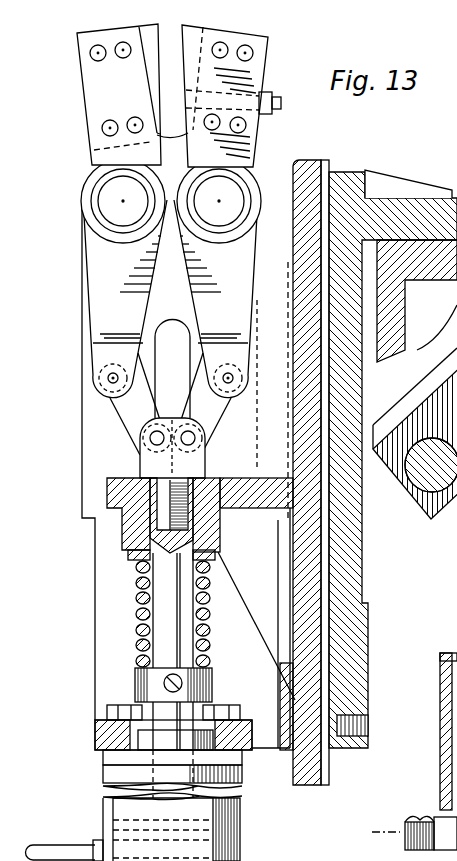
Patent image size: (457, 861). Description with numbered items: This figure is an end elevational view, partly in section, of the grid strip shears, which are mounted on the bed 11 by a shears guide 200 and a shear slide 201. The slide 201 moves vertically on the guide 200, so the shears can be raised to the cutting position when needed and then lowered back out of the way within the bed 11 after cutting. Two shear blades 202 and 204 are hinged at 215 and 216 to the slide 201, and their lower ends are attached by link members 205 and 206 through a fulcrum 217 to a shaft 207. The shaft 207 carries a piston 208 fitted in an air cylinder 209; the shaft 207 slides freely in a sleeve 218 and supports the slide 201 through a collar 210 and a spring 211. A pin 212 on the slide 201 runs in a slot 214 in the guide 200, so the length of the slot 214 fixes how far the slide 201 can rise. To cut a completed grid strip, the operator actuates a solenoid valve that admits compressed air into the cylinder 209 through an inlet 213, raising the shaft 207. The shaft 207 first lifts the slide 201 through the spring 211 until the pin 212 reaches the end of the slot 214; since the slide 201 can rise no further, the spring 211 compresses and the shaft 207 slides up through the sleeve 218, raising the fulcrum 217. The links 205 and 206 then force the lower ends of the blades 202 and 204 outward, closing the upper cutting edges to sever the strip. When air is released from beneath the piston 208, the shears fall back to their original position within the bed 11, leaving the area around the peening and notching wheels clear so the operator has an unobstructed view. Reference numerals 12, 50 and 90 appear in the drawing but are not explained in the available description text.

The shears guide 200 is at (350, 171).
The shear slide 201 is at (303, 160).
The shear blade 202 is at (77, 40).
The shear blade 204 is at (242, 37).
The link member 205 is at (121, 412).
The link member 206 is at (212, 416).
The shaft 207 is at (237, 791).
The piston 208 is at (245, 822).
The air cylinder 209 is at (103, 780).
The collar 210 is at (213, 682).
The spring 211 is at (209, 648).
The pin 212 is at (172, 425).
The inlet 213 is at (76, 837).
The slot 214 is at (176, 324).
The hinge 215 is at (104, 193).
The hinge 216 is at (234, 184).
The fulcrum 217 is at (203, 453).
The sleeve 218 is at (228, 477).
The bed 11 is at (427, 271).
The section line 12 is at (388, 803).
The spring 50 is at (424, 817).
The lever 90 is at (418, 485).